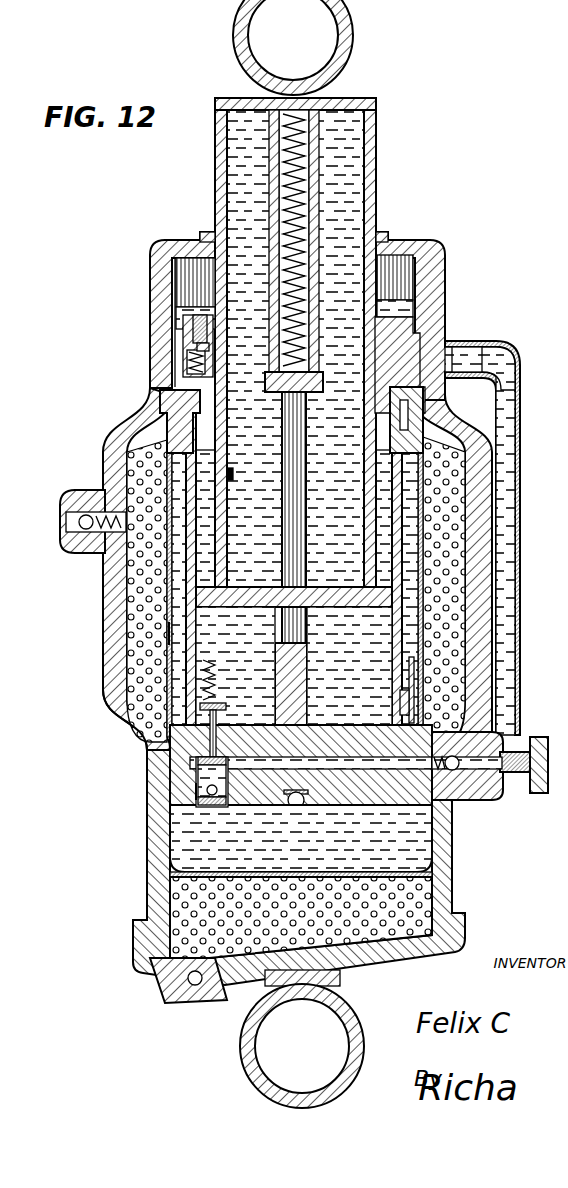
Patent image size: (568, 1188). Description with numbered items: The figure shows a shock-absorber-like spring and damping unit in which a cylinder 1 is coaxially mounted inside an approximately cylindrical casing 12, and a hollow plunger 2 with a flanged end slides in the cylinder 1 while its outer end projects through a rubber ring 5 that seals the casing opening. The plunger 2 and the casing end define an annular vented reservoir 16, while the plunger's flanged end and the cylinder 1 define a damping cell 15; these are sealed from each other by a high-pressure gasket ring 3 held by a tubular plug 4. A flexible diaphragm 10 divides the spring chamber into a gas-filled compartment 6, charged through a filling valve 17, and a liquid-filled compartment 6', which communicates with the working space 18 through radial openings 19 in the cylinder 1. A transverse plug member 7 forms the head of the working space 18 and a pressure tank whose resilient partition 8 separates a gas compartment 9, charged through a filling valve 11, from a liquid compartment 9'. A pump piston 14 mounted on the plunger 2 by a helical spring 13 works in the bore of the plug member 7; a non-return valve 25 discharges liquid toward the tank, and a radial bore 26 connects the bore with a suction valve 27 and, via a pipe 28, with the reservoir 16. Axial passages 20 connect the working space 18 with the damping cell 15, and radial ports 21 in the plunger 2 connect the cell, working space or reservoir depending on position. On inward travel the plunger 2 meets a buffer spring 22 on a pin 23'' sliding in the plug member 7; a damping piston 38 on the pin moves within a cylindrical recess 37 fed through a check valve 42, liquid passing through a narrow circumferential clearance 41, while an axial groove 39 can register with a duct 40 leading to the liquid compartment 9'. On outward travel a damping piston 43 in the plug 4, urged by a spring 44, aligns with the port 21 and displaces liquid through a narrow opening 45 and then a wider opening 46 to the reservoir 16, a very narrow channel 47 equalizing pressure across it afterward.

The cylinder 1 is at (190, 598).
The hollow plunger 2 is at (377, 150).
The high-pressure gasket ring 3 is at (375, 434).
The tubular plug 4 is at (414, 342).
The rubber ring 5 is at (204, 240).
The gas-filled compartment 6 is at (323, 570).
The liquid-filled compartment 6' is at (121, 641).
The plug member 7 is at (454, 810).
The resilient partition 8 is at (186, 880).
The gas filled compartment 9 is at (301, 939).
The liquid filled compartment 9' is at (326, 861).
The flexible diaphragm 10 is at (170, 440).
The filling valve 11 is at (175, 1000).
The casing 12 is at (160, 252).
The helical spring 13 is at (282, 142).
The piston 14 is at (300, 496).
The damping cell 15 is at (186, 563).
The annular vented reservoir 16 is at (406, 270).
The filling valve 17 is at (62, 505).
The working space 18 is at (352, 299).
The radial openings 19 is at (400, 690).
The axial passages 20 is at (230, 603).
The radial ports 21 is at (231, 476).
The buffer spring 22 is at (224, 674).
The pin 23'' is at (113, 720).
The spring biased non-return valve 25 is at (306, 812).
The radial bore 26 is at (352, 756).
The suction valve 27 is at (452, 745).
The pipe 28 is at (521, 409).
The cylindrical recess 37 is at (197, 792).
The damping piston 38 is at (198, 773).
The axial groove 39 is at (218, 720).
The duct 40 is at (258, 808).
The circumferential clearance 41 is at (197, 763).
The check valve 42 is at (198, 803).
The damping piston 43 is at (208, 346).
The spring 44 is at (186, 360).
The narrow opening 45 is at (186, 338).
The wider opening 46 is at (176, 318).
The narrow channel 47 is at (210, 347).